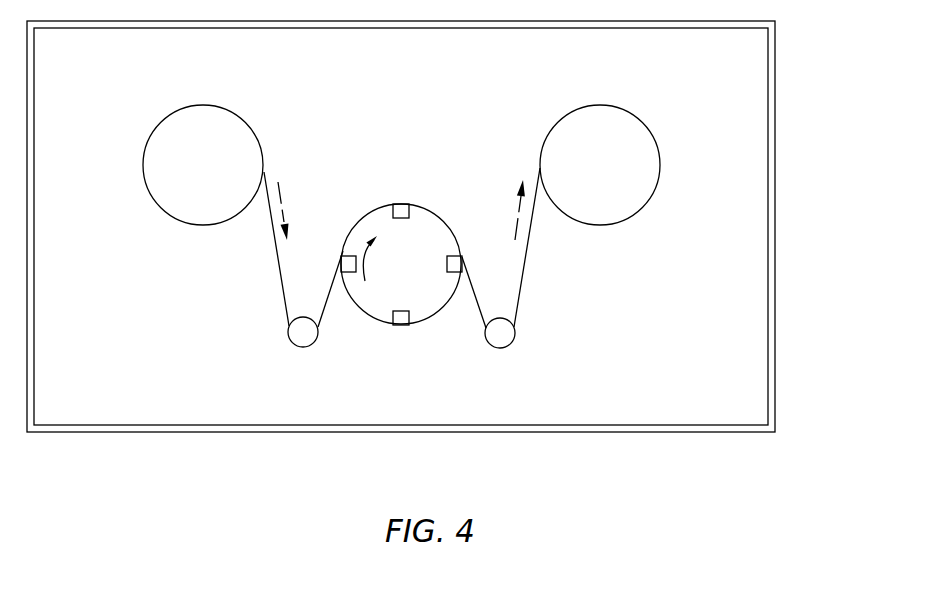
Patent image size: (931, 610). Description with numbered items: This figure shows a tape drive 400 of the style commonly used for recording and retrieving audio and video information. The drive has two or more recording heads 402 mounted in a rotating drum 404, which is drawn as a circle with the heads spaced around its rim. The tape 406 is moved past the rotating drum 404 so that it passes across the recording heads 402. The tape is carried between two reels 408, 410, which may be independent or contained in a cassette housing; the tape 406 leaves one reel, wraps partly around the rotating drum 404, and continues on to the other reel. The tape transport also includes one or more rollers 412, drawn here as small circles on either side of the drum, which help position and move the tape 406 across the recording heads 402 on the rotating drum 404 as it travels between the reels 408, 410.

The tape drive 400 is at (592, 470).
The recording heads 402 is at (349, 258).
The rotating drum 404 is at (438, 217).
The tape 406 is at (527, 268).
The reel 408 is at (173, 118).
The reel 410 is at (632, 122).
The rollers 412 is at (303, 348).